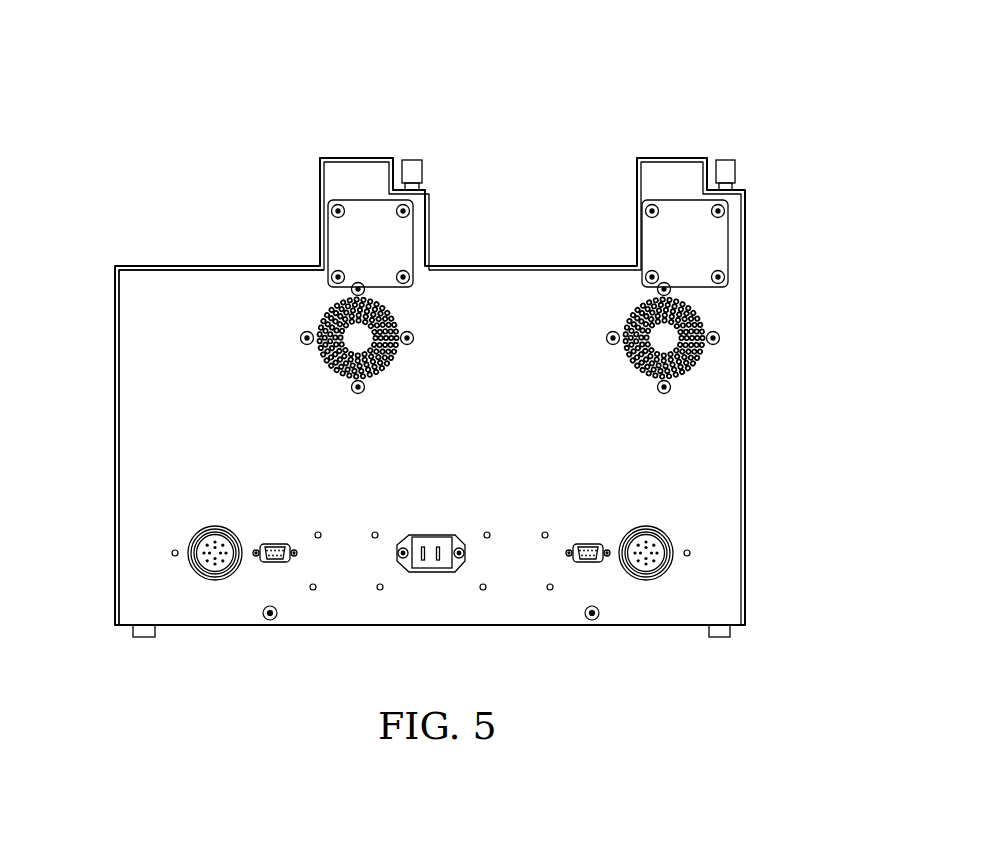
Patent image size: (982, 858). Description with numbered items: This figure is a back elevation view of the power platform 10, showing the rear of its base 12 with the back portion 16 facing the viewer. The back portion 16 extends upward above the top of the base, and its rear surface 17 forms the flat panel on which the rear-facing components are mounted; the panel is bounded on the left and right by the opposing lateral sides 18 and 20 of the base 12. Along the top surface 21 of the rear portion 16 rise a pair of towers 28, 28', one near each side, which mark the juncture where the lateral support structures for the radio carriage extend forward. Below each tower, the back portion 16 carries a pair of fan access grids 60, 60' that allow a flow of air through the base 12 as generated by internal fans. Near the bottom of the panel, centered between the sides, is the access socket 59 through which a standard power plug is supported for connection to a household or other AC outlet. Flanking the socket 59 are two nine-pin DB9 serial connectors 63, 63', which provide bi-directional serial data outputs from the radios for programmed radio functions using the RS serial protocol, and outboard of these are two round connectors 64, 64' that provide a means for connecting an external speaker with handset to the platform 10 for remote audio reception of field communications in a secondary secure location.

The power platform 10 is at (449, 109).
The base 12 is at (758, 531).
The back portion 16 is at (140, 447).
The rear surface 17 is at (173, 333).
The lateral side 18 is at (115, 559).
The lateral side 20 is at (748, 588).
The top surface 21 is at (178, 266).
The tower 28 is at (691, 183).
The tower 28' is at (372, 183).
The access socket 59 is at (432, 537).
The fan access grid 60 is at (646, 338).
The fan access grid 60' is at (337, 338).
The DB9 serial connector 63 is at (588, 525).
The DB9 serial connector 63' is at (275, 525).
The connector 64 is at (646, 526).
The connector 64' is at (215, 526).